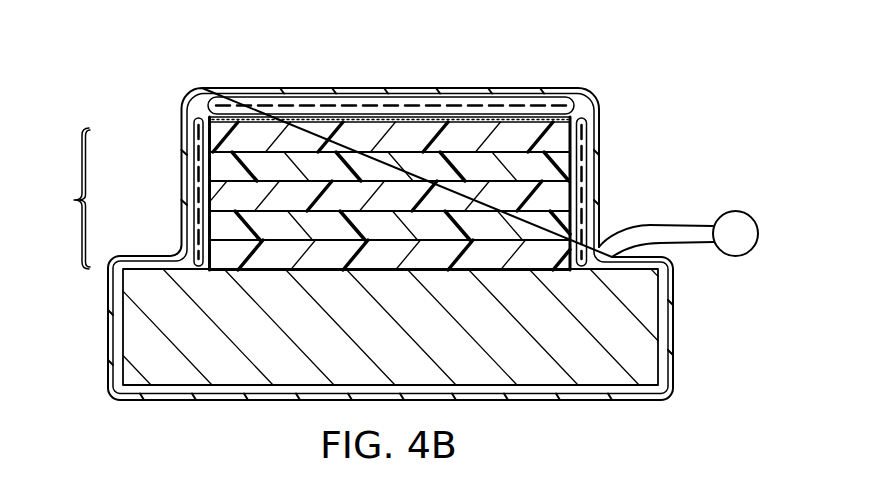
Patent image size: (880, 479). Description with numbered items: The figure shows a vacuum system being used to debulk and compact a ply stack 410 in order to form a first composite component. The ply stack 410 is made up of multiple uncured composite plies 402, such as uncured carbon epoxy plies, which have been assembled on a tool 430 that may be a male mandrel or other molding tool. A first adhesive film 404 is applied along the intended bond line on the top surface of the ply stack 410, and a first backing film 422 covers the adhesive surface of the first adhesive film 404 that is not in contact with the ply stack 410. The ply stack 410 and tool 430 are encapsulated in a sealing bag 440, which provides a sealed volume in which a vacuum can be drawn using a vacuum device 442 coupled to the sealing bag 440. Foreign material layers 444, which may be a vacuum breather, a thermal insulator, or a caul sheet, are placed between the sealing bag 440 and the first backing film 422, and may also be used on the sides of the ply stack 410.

The uncured composite plies 402 is at (222, 173).
The first adhesive film 404 is at (452, 118).
The ply stack 410 is at (298, 193).
The first backing film 422 is at (188, 110).
The tool 430 is at (645, 353).
The sealing bag 440 is at (598, 134).
The vacuum device 442 is at (738, 257).
The foreign material layer 444 is at (192, 152).